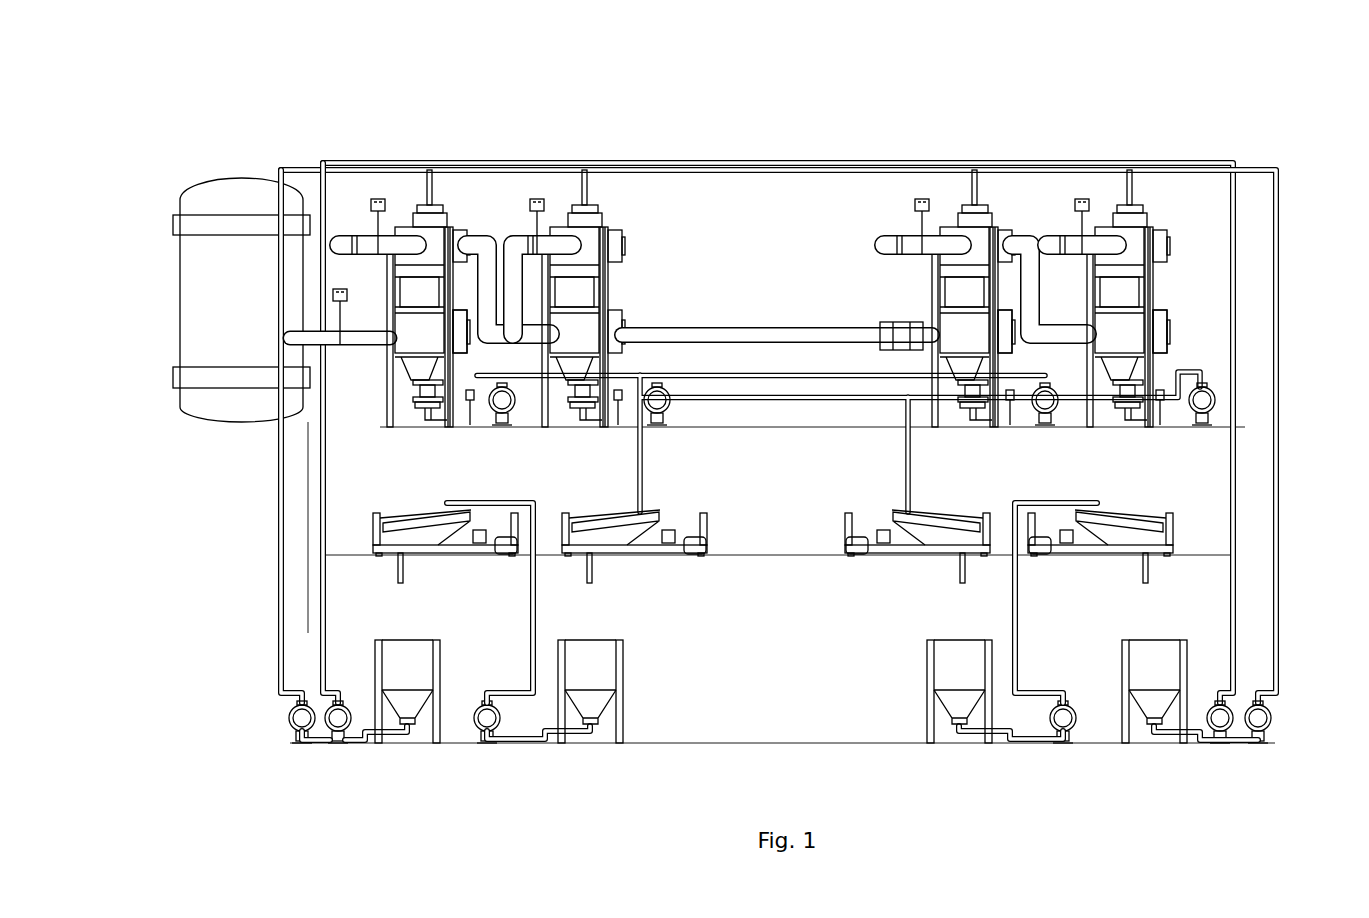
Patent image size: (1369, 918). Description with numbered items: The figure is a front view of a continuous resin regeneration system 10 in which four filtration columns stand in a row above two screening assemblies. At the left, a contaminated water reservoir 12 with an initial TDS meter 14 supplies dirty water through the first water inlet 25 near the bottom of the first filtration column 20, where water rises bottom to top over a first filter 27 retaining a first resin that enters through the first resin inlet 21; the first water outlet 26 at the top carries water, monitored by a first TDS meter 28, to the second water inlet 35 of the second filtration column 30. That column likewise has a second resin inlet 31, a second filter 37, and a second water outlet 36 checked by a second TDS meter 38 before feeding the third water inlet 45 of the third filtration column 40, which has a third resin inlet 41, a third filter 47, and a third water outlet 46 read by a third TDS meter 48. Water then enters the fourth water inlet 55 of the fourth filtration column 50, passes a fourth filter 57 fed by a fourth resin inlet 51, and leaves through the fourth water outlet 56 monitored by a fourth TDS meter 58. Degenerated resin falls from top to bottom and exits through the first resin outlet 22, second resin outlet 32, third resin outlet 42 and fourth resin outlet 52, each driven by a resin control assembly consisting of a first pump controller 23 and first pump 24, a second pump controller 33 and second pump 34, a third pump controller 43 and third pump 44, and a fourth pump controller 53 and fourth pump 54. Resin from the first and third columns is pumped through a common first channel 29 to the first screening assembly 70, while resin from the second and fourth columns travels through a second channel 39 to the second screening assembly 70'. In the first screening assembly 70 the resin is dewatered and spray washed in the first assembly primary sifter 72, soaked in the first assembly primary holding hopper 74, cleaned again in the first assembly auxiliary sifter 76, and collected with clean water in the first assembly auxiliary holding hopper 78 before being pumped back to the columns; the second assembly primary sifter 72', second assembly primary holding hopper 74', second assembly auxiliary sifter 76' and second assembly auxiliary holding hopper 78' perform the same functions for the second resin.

The continuous resin regeneration system 10 is at (415, 84).
The contaminated water reservoir 12 is at (205, 255).
The initial TDS meter 14 is at (335, 292).
The first filtration column 20 is at (370, 280).
The first resin inlet 21 is at (438, 212).
The first resin outlet 22 is at (405, 393).
The first pump controller 23 is at (470, 400).
The first pump 24 is at (502, 412).
The first water inlet 25 is at (360, 340).
The first water outlet 26 is at (402, 245).
The first filter 27 is at (470, 343).
The first TDS meter 28 is at (375, 198).
The first channel 29 is at (322, 633).
The second filtration column 30 is at (658, 262).
The second resin inlet 31 is at (590, 212).
The second resin outlet 32 is at (585, 395).
The second pump controller 33 is at (618, 400).
The second pump 34 is at (657, 412).
The second water inlet 35 is at (535, 335).
The second water outlet 36 is at (565, 245).
The second filter 37 is at (625, 348).
The second TDS meter 38 is at (537, 198).
The second channel 39 is at (1280, 532).
The third filtration column 40 is at (918, 281).
The third resin inlet 41 is at (978, 212).
The third resin outlet 42 is at (972, 387).
The third pump controller 43 is at (1010, 400).
The third pump 44 is at (1043, 412).
The third water inlet 45 is at (903, 330).
The third water outlet 46 is at (945, 245).
The third filter 47 is at (1013, 343).
The third TDS meter 48 is at (922, 198).
The fourth filtration column 50 is at (1180, 286).
The fourth resin inlet 51 is at (1140, 212).
The fourth resin outlet 52 is at (1127, 387).
The fourth pump controller 53 is at (1160, 400).
The fourth pump 54 is at (1202, 412).
The fourth water inlet 55 is at (1065, 330).
The fourth water outlet 56 is at (1110, 245).
The fourth filter 57 is at (1170, 337).
The fourth TDS meter 58 is at (1082, 198).
The first screening assembly 70 is at (523, 623).
The second screening assembly 70' is at (1034, 623).
The first assembly primary sifter 72 is at (634, 557).
The second assembly primary sifter 72' is at (917, 556).
The first assembly primary holding hopper 74 is at (612, 691).
The second assembly primary holding hopper 74' is at (929, 691).
The first assembly auxiliary sifter 76 is at (445, 557).
The second assembly auxiliary sifter 76' is at (1100, 552).
The first assembly auxiliary holding hopper 78 is at (431, 691).
The second assembly auxiliary holding hopper 78' is at (1124, 691).